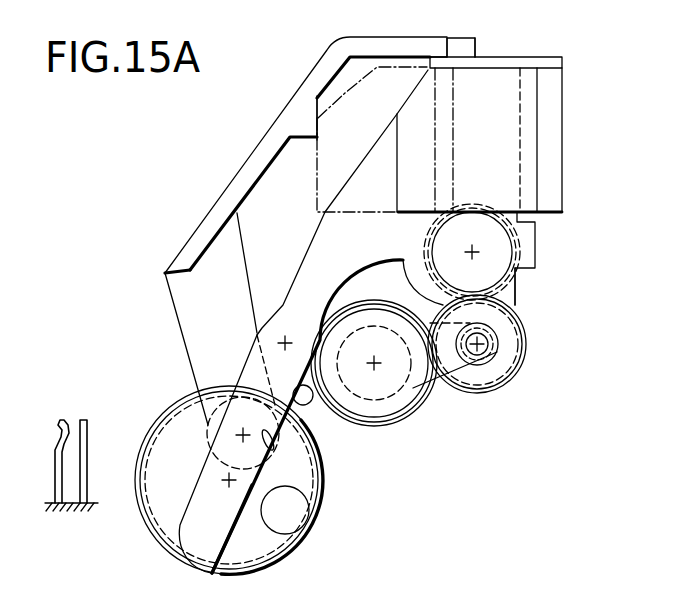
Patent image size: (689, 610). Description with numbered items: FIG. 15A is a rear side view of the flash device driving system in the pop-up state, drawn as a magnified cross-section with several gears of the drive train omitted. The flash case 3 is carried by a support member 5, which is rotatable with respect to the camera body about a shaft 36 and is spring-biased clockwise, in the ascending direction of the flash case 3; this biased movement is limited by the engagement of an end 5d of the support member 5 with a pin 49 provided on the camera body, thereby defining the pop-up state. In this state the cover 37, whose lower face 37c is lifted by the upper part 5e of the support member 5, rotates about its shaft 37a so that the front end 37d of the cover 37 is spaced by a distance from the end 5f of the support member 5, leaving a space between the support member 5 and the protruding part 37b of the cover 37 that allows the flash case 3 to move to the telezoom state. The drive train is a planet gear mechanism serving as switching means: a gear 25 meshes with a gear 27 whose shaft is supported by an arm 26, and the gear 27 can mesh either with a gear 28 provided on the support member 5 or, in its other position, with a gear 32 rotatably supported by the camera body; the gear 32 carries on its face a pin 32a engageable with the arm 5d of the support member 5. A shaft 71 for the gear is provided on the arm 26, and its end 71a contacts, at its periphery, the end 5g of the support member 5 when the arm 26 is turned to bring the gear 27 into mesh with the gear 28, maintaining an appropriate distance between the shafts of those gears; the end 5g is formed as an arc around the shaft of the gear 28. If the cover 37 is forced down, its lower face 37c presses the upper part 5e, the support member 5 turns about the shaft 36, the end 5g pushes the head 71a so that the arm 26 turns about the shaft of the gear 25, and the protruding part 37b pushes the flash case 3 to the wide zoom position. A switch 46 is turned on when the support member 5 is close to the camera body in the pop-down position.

The flash case 3 is at (345, 93).
The support member 5 is at (310, 250).
The arm (end) of the support member 5d is at (233, 517).
The upper part of the support member 5e is at (462, 63).
The end of the support member 5f is at (562, 62).
The end of the support member 5g is at (525, 322).
The gear 25 is at (395, 427).
The arm 26 is at (410, 390).
The gear 27 is at (497, 387).
The gear 28 is at (518, 238).
The gear 32 is at (265, 570).
The pin 32a is at (292, 537).
The shaft 36 is at (288, 338).
The cover 37 is at (253, 155).
The shaft 37a is at (235, 435).
The protruding part of the cover 37b is at (315, 123).
The lower face of the cover 37c is at (445, 55).
The front end of the cover 37d is at (475, 50).
The switch 46 is at (72, 422).
The pin 49 is at (310, 403).
The shaft 71 is at (505, 356).
The end of the shaft 71a is at (498, 342).